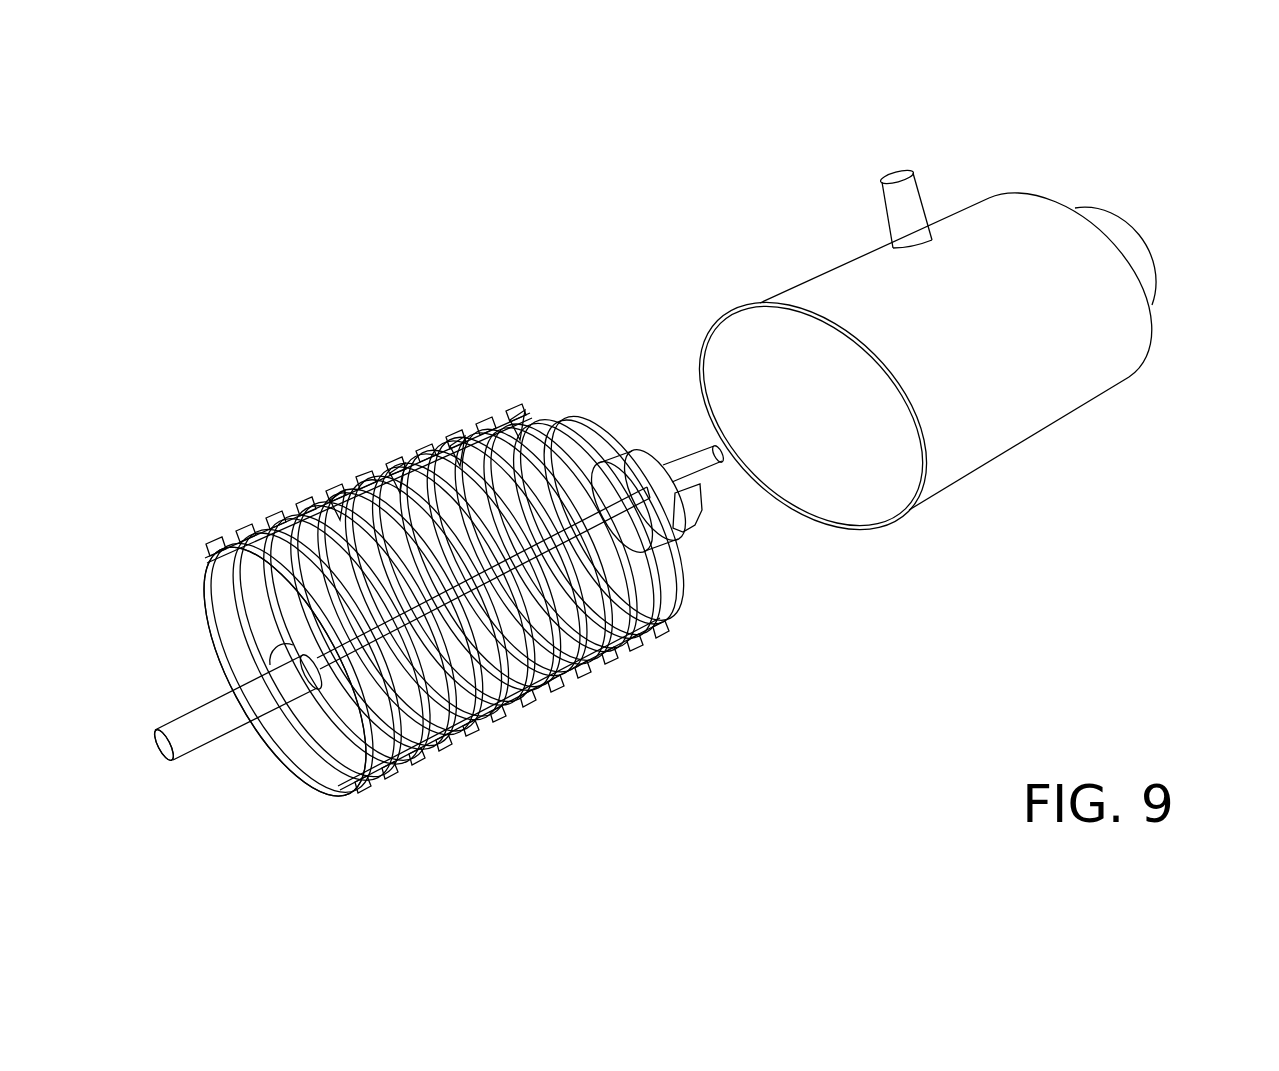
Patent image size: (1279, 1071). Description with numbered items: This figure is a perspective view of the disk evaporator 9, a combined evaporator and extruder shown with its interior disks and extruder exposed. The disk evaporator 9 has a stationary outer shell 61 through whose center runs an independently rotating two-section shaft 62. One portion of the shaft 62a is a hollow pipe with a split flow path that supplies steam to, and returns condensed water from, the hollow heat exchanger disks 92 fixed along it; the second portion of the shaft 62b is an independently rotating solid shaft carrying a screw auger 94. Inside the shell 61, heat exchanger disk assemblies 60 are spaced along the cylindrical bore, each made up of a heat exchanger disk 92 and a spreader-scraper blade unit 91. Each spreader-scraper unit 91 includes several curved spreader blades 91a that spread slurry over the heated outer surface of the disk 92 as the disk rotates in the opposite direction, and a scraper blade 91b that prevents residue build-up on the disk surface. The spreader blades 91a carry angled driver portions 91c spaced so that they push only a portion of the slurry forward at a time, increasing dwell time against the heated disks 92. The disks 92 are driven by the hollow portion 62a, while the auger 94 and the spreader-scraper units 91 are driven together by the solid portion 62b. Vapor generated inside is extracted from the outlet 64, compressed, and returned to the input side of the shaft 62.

The disk evaporator 9 is at (1153, 168).
The heat exchanger disk assembly 60 is at (456, 570).
The outer shell 61 is at (1005, 407).
The two-section shaft 62 is at (187, 723).
The hollow pipe shaft portion 62a is at (180, 740).
The solid shaft portion 62b is at (702, 466).
The vapor outlet 64 is at (898, 203).
The spreader-scraper blade unit 91 is at (337, 740).
The spreader blade 91a is at (227, 537).
The scraper blade 91b is at (292, 630).
The driver portion 91c is at (653, 633).
The heat exchanger disk 92 is at (437, 500).
The screw auger 94 is at (638, 455).